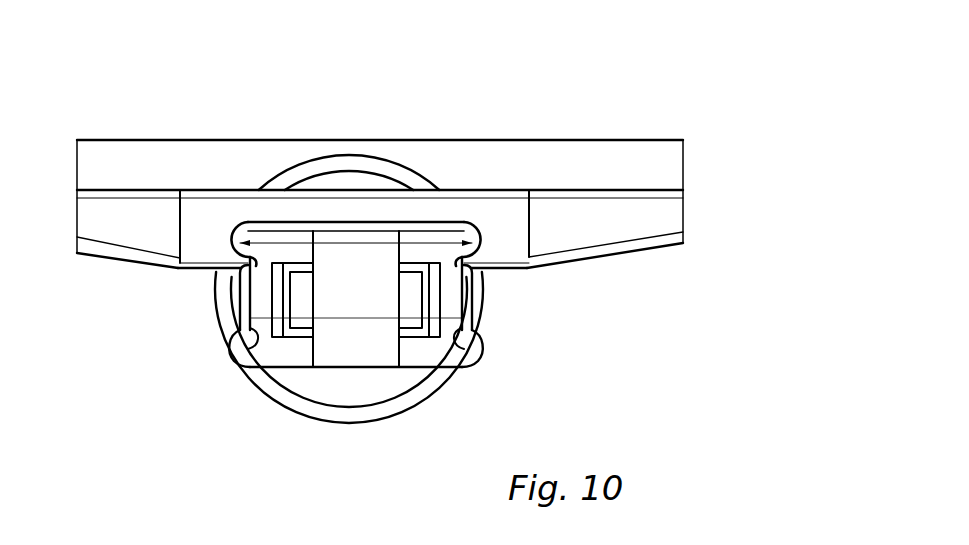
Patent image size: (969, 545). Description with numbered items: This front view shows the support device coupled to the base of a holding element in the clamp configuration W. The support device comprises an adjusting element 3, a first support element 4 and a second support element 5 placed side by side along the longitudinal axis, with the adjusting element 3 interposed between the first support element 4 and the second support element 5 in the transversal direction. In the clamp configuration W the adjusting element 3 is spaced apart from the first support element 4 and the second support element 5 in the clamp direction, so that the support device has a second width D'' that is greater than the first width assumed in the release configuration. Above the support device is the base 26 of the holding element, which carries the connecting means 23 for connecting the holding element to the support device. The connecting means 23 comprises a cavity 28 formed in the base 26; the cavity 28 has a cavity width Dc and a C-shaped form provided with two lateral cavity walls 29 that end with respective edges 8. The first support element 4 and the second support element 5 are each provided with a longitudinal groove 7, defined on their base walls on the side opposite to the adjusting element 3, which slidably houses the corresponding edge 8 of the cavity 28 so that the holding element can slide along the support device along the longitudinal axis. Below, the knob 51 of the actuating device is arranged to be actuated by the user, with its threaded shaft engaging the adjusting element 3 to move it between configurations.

The adjusting element 3 is at (362, 300).
The first support element 4 is at (460, 318).
The second support element 5 is at (272, 318).
The longitudinal groove 7 is at (236, 334).
The edge 8 is at (250, 263).
The connecting means 23 is at (204, 167).
The base 26 is at (495, 197).
The cavity 28 is at (269, 212).
The lateral cavity walls 29 is at (481, 240).
The knob 51 is at (283, 426).
The clamp configuration W is at (732, 208).
The cavity width Dc is at (365, 241).
The second width D'' is at (356, 410).